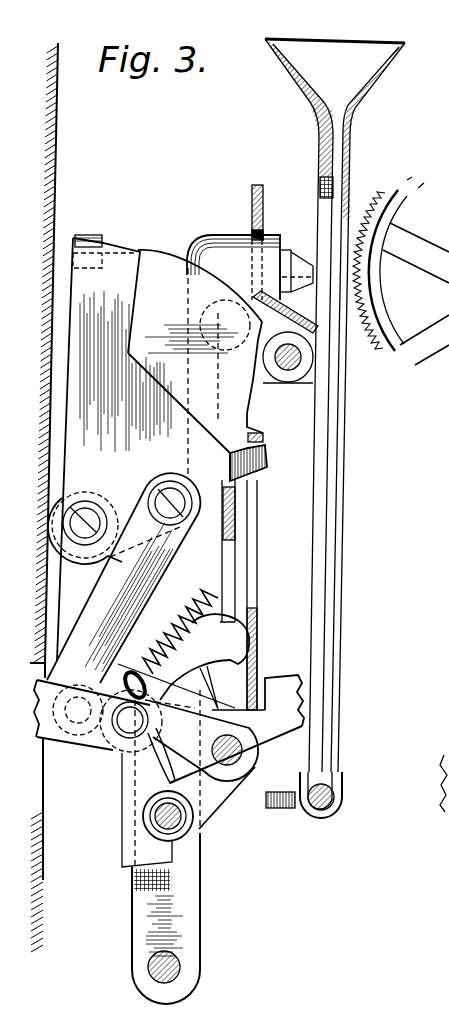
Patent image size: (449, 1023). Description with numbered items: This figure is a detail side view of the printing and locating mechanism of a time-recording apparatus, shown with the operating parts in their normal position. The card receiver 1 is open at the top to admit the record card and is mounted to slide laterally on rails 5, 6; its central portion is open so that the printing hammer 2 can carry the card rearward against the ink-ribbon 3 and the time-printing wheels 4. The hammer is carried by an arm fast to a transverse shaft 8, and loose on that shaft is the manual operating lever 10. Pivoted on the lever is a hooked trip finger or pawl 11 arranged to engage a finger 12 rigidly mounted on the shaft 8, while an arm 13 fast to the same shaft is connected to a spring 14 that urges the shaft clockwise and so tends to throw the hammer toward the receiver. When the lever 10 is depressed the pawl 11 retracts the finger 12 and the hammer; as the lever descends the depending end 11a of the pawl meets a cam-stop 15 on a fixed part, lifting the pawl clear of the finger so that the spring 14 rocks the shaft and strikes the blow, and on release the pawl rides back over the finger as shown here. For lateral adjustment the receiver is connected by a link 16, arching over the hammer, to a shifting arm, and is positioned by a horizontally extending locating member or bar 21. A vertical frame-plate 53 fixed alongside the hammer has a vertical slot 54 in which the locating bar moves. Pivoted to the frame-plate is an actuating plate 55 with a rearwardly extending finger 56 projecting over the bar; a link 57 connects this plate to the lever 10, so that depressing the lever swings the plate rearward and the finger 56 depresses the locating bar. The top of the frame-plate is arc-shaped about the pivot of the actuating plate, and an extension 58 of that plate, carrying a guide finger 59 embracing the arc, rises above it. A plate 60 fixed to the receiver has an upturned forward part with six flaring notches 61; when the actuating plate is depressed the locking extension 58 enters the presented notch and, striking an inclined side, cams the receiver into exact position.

The card receiver 1 is at (370, 97).
The printing hammer 2 is at (230, 242).
The ink-ribbon 3 is at (356, 346).
The time-printing wheels 4 is at (368, 303).
The rail 5 is at (285, 372).
The rail 6 is at (321, 810).
The transverse shaft 8 is at (242, 752).
The manual operating lever 10 is at (102, 744).
The trip finger or pawl 11 is at (235, 640).
The depending end of pawl 11a is at (172, 780).
The finger 12 is at (217, 688).
The arm 13 is at (179, 722).
The spring 14 is at (180, 619).
The cam-stop 15 is at (150, 817).
The link 16 is at (262, 190).
The locating member or bar 21 is at (238, 516).
The frame-plate 53 is at (156, 258).
The vertical slot 54 is at (230, 568).
The actuating plate 55 is at (146, 385).
The finger 56 is at (264, 461).
The link 57 is at (113, 592).
The extension 58 is at (136, 302).
The guide finger 59 is at (97, 241).
The plate 60 is at (285, 312).
The flaring notches 61 is at (259, 322).